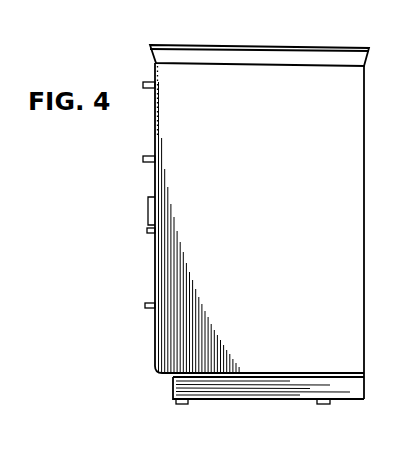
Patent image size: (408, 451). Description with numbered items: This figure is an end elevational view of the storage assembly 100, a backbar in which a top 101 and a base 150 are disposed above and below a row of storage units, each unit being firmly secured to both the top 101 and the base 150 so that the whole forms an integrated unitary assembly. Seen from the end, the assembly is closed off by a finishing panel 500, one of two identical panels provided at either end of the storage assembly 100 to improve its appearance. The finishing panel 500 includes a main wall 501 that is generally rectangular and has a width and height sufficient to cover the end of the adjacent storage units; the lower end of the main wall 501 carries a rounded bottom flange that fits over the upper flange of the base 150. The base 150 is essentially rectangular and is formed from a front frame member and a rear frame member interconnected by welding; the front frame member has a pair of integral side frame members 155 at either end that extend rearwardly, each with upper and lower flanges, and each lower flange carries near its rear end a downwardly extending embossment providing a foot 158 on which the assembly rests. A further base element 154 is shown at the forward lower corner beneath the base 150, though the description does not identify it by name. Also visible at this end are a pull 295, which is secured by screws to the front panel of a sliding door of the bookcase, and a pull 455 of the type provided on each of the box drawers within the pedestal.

The storage assembly 100 is at (114, 183).
The top 101 is at (232, 48).
The pull 295 is at (147, 207).
The pull 455 is at (145, 307).
The finishing panel 500 is at (190, 261).
The main wall 501 is at (258, 206).
The base 150 is at (166, 384).
The left foot 154 is at (182, 404).
The side frame member 155 is at (261, 394).
The foot 158 is at (323, 404).